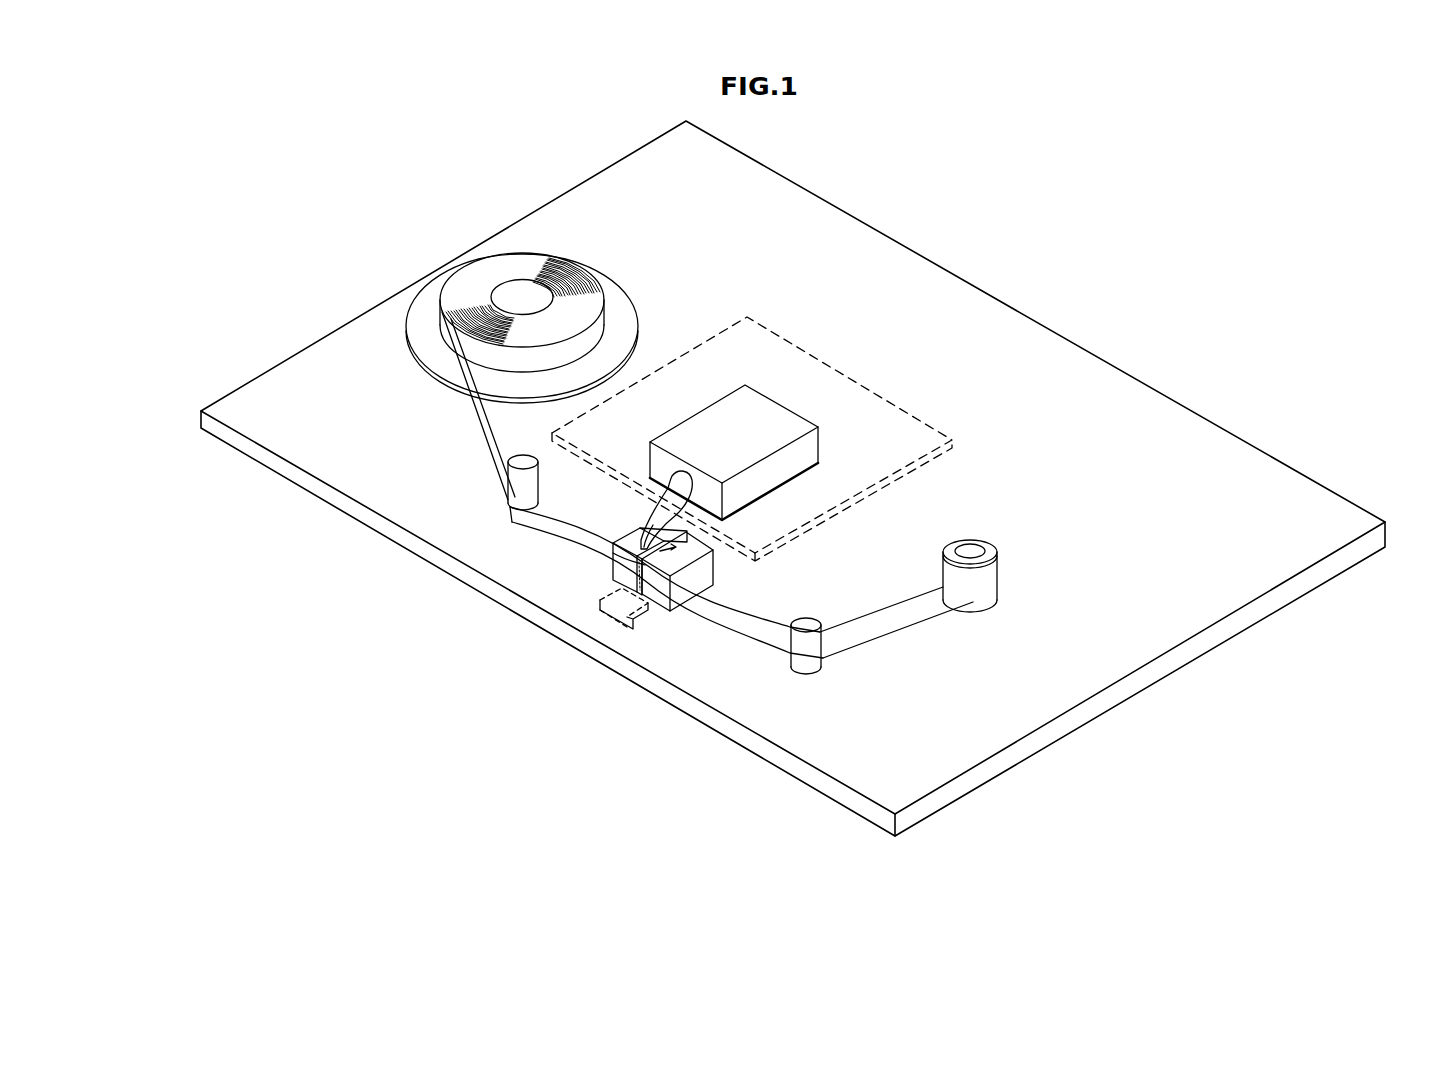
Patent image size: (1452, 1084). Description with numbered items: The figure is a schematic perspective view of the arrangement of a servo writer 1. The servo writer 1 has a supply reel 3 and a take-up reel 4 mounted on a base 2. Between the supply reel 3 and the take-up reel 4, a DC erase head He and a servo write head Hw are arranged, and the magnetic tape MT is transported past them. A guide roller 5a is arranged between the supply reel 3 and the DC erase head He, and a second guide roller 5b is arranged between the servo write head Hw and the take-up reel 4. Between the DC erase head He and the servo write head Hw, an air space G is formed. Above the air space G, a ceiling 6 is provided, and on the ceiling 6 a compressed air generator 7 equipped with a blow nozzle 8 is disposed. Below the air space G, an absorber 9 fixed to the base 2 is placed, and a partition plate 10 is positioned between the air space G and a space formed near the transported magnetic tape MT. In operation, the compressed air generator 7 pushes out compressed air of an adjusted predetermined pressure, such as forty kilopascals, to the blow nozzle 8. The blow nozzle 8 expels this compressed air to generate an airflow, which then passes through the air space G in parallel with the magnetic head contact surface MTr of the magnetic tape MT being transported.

The servo writer 1 is at (983, 232).
The base 2 is at (1235, 465).
The supply reel 3 is at (523, 297).
The take-up reel 4 is at (975, 550).
The guide roller 5a is at (507, 463).
The guide roller 5b is at (806, 622).
The ceiling 6 is at (812, 384).
The compressed air generator 7 is at (765, 434).
The blow nozzle 8 is at (669, 488).
The absorber 9 is at (627, 601).
The partition plate 10 is at (653, 594).
The magnetic tape MT is at (473, 298).
The magnetic head contact surface MTr is at (566, 528).
The DC erase head He is at (612, 560).
The servo write head Hw is at (710, 582).
The air space G is at (673, 560).